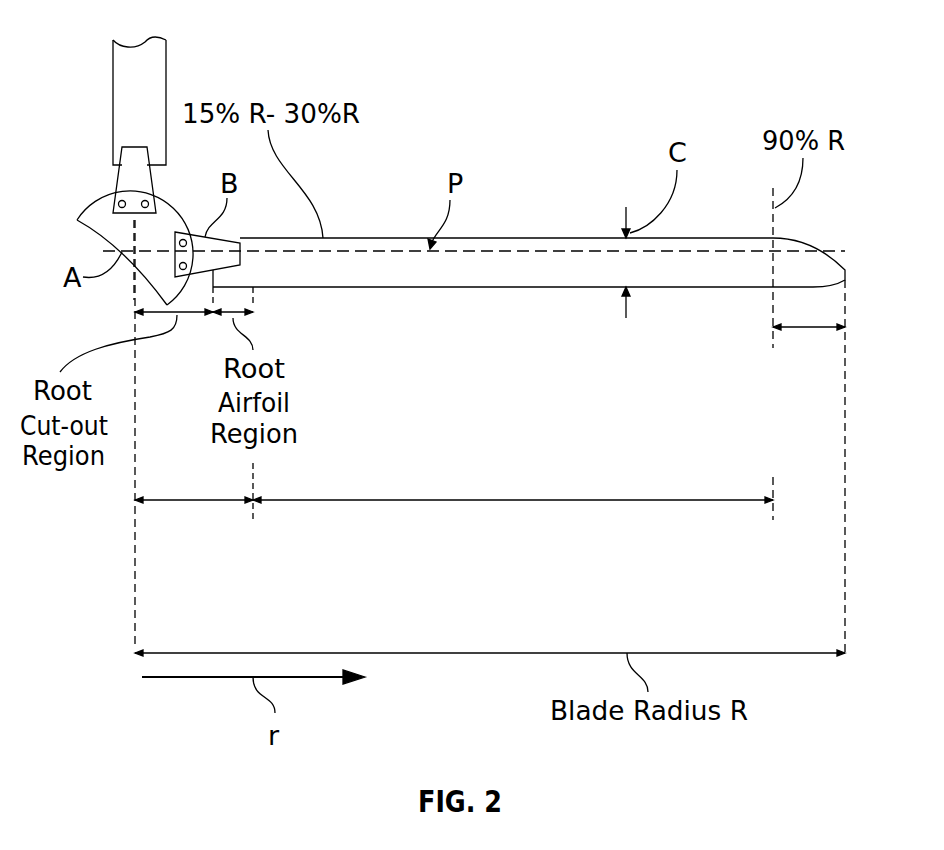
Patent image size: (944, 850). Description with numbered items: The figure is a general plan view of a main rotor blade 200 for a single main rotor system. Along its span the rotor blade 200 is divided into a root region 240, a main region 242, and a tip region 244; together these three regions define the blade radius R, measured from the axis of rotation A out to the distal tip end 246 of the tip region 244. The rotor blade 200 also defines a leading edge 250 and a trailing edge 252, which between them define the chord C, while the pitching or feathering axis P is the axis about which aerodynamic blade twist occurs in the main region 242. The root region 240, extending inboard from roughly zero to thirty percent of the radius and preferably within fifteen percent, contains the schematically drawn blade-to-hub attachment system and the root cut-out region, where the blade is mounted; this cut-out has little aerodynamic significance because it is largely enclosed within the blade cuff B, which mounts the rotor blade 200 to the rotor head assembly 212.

The main rotor blade 200 is at (537, 208).
The rotor head assembly 212 is at (92, 197).
The root region 240 is at (210, 500).
The main region 242 is at (513, 500).
The tip region 244 is at (812, 328).
The distal tip end 246 is at (845, 272).
The leading edge 250 is at (373, 238).
The trailing edge 252 is at (445, 287).